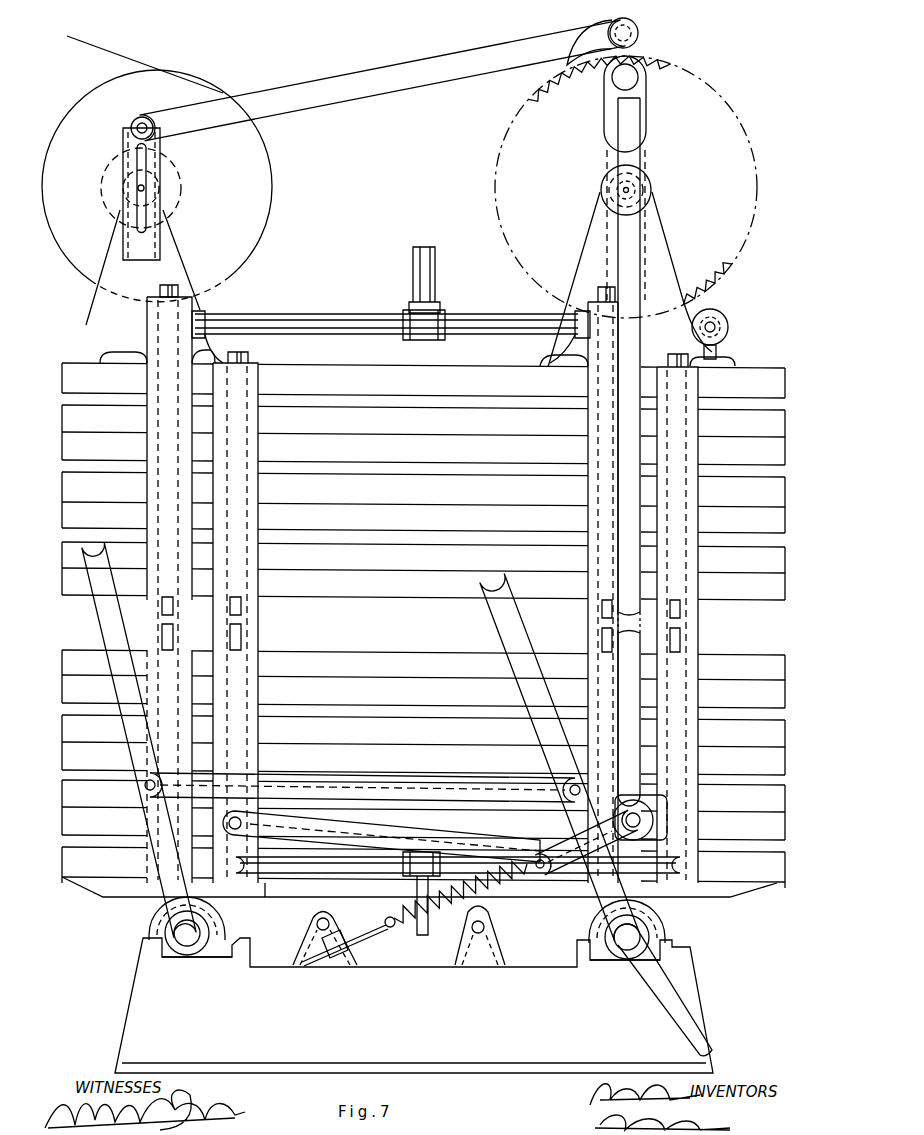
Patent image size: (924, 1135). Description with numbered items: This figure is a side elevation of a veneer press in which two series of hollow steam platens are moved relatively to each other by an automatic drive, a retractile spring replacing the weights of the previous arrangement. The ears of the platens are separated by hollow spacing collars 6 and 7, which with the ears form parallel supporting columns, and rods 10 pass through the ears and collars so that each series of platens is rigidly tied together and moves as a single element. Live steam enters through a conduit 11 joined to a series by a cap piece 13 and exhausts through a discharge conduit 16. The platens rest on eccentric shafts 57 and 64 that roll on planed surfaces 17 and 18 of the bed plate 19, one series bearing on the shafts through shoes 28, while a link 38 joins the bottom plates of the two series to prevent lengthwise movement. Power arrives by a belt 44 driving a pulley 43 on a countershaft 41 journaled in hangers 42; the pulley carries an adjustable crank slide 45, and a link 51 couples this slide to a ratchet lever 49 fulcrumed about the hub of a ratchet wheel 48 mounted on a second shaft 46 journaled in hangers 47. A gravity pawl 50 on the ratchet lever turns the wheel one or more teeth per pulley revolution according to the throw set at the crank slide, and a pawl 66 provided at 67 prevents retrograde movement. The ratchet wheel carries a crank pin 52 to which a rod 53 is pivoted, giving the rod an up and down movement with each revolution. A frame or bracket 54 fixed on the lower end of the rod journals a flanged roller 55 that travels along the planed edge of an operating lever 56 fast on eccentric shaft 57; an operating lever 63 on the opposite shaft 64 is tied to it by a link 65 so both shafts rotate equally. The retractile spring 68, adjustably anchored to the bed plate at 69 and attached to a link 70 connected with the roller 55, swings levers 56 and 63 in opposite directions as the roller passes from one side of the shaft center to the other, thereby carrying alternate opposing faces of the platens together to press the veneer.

The hollow spacing collar 6 is at (378, 584).
The hollow spacing collar 7 is at (252, 424).
The rod 10 is at (672, 634).
The live steam conduit 11 is at (428, 249).
The cap piece 13 is at (150, 328).
The discharge conduit 16 is at (316, 874).
The planed surface 17 is at (230, 958).
The planed surface 18 is at (620, 961).
The bed plate 19 is at (414, 1005).
The shoe 28 is at (266, 896).
The link 38 is at (381, 840).
The countershaft 41 is at (146, 188).
The hanger 42 is at (143, 226).
The pulley 43 is at (157, 186).
The belt 44 is at (128, 50).
The crank slide 45 is at (131, 132).
The second shaft 46 is at (624, 190).
The hanger 47 is at (630, 279).
The ratchet wheel 48 is at (626, 187).
The ratchet lever 49 is at (640, 57).
The gravity pawl 50 is at (604, 30).
The link 51 is at (383, 80).
The crank pin 52 is at (633, 82).
The rod 53 is at (632, 300).
The frame or bracket 54 is at (652, 796).
The flanged roller 55 is at (645, 815).
The operating lever 56 is at (596, 814).
The eccentric shaft 57 is at (627, 929).
The operating lever 63 is at (101, 607).
The eccentric shaft 64 is at (187, 926).
The link 65 is at (362, 779).
The pawl 66 is at (632, 181).
The pawl mounting 67 is at (716, 327).
The retractile spring 68 is at (466, 895).
The adjustable spring connection 69 is at (330, 959).
The link 70 is at (553, 838).